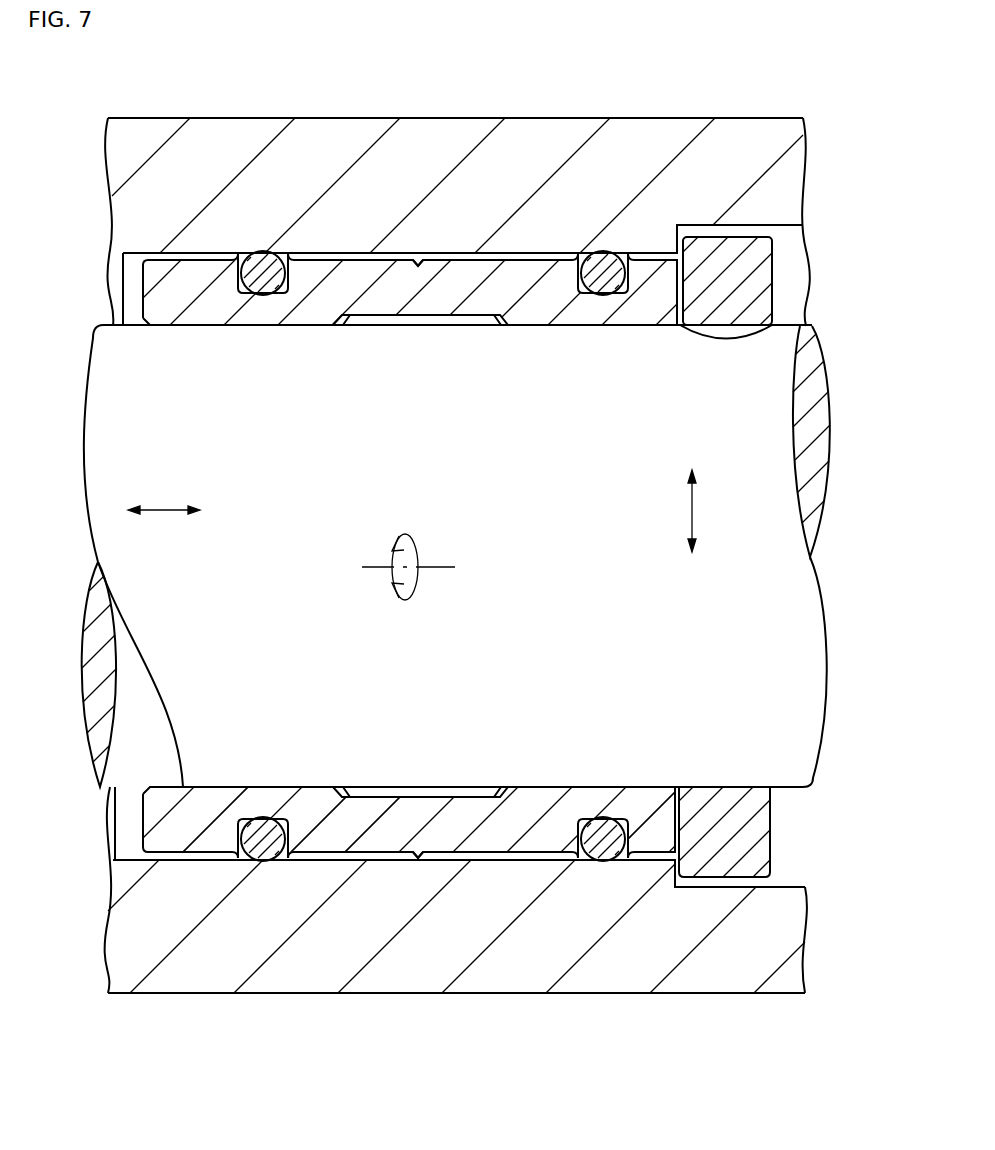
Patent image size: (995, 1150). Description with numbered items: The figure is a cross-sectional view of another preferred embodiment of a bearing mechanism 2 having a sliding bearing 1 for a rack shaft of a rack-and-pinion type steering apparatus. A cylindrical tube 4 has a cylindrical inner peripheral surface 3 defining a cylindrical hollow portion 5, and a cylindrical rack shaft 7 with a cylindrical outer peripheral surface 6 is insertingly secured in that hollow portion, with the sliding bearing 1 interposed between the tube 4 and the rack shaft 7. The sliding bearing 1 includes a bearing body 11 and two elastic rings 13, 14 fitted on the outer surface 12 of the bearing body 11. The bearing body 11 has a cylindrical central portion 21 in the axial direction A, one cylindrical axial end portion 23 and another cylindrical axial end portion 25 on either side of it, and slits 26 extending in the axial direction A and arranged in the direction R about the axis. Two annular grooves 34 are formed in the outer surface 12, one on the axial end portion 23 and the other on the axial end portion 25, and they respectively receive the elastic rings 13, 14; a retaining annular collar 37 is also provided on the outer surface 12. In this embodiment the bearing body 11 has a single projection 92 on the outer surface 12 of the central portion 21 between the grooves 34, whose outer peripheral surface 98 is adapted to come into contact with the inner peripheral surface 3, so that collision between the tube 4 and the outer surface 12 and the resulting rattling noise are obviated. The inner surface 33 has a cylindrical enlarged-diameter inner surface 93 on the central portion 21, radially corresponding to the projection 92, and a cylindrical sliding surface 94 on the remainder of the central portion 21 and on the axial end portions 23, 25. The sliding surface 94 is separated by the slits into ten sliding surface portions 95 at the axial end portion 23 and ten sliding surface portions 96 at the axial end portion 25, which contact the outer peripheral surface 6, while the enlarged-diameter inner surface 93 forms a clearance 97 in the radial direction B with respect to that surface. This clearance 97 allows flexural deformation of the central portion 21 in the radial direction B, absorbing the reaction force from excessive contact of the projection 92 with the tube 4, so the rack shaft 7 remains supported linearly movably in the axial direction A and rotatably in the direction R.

The sliding bearing 1 is at (208, 248).
The bearing mechanism 2 is at (95, 1012).
The inner peripheral surface 3 is at (151, 860).
The tube 4 is at (157, 175).
The hollow portion 5 is at (120, 825).
The outer peripheral surface 6 is at (308, 327).
The rack shaft 7 is at (648, 353).
The bearing body 11 is at (523, 826).
The outer surface 12 is at (377, 825).
The elastic ring 13 is at (263, 845).
The elastic ring 14 is at (607, 835).
The central portion 21 is at (472, 290).
The axial end portion 23 is at (204, 830).
The axial end portion 25 is at (653, 812).
The slits 26 is at (322, 822).
The inner surface 33 is at (182, 335).
The annular grooves 34 is at (264, 273).
The retaining annular collar 37 is at (720, 867).
The projection 92 is at (420, 853).
The enlarged-diameter inner surface 93 is at (354, 322).
The sliding surface 94 is at (656, 778).
The sliding surface portions 95 is at (250, 328).
The sliding surface portions 96 is at (797, 320).
The clearance 97 is at (475, 797).
The outer peripheral surface 98 is at (421, 255).
The axial direction A is at (165, 505).
The radial direction B is at (688, 508).
The direction R is at (418, 582).